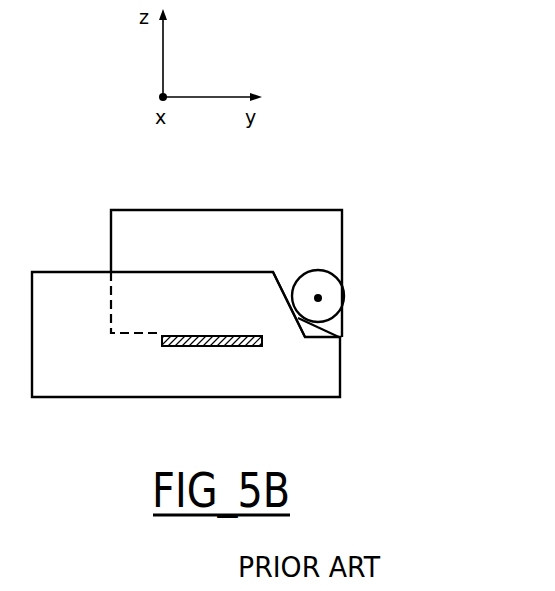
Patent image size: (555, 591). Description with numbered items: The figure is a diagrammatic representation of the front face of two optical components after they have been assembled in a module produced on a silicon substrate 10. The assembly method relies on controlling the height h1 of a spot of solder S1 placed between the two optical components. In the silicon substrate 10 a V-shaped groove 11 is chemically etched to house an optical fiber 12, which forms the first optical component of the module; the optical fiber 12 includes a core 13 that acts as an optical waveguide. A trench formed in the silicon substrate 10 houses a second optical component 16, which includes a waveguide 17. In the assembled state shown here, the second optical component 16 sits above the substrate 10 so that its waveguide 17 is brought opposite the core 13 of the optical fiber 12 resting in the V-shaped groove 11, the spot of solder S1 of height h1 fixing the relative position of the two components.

The silicon substrate 10 is at (45, 388).
The V-shaped groove 11 is at (314, 330).
The optical fiber 12 is at (318, 326).
The core 13 is at (333, 300).
The second optical component 16 is at (334, 240).
The waveguide 17 is at (330, 297).
The spot of solder S1 is at (188, 348).
The height of the spot of solder h1 is at (275, 332).